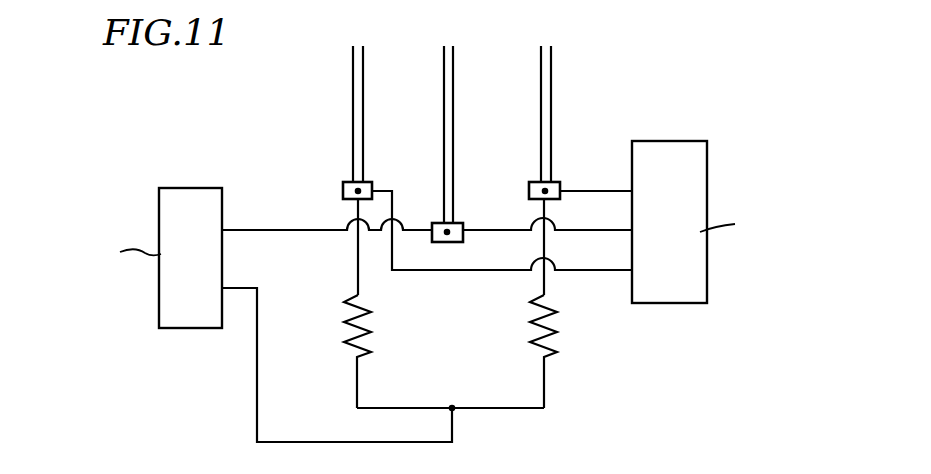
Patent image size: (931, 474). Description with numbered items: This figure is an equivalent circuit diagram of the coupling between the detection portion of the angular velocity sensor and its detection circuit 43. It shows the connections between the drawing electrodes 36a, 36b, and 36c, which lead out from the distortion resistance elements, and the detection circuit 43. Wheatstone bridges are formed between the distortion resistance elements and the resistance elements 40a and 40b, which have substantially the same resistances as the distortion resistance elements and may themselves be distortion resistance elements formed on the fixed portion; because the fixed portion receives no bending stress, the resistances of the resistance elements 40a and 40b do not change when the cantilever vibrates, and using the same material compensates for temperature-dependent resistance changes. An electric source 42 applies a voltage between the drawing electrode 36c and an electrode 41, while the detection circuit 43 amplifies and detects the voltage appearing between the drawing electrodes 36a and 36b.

The electric source 42 is at (185, 188).
The detection circuit 43 is at (679, 141).
The drawing electrode 36a is at (343, 190).
The drawing electrode 36b is at (529, 190).
The drawing electrode 36c is at (432, 226).
The resistance element 40a is at (346, 331).
The resistance element 40b is at (555, 332).
The electrode 41 is at (450, 390).